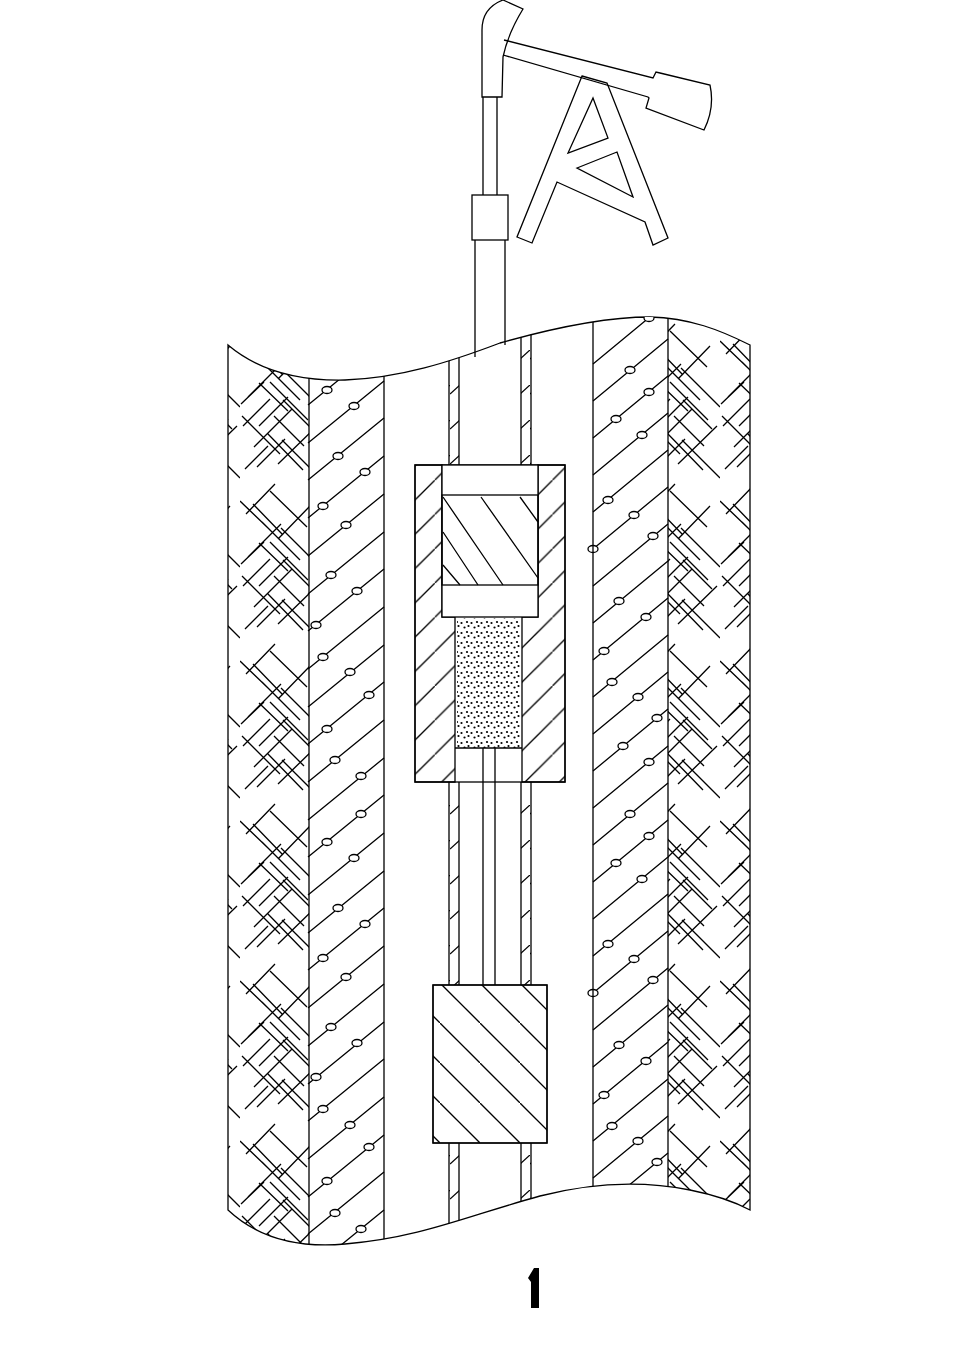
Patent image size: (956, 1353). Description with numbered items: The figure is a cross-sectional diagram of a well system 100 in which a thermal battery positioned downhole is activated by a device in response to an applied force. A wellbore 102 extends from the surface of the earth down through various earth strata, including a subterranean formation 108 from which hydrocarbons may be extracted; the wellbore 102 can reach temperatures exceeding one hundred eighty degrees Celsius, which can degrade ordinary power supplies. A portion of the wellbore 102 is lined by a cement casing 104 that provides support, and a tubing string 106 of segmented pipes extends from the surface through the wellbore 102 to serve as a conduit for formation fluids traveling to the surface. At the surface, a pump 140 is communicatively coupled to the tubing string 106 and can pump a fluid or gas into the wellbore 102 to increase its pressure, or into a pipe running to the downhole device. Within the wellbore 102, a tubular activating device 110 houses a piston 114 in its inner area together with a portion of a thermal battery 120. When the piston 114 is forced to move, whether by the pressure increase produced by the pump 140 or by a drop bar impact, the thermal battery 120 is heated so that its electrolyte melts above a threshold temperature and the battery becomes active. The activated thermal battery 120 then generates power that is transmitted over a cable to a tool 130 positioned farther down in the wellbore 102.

The well system 100 is at (114, 155).
The wellbore 102 is at (595, 535).
The cement casing 104 is at (668, 723).
The tubing string 106 is at (522, 372).
The subterranean formation 108 is at (750, 785).
The activating device 110 is at (413, 485).
The piston 114 is at (443, 573).
The thermal battery 120 is at (458, 728).
The tool 130 is at (432, 1048).
The pump 140 is at (472, 212).